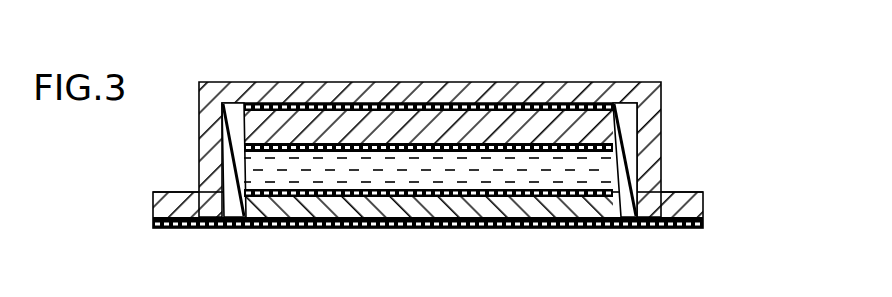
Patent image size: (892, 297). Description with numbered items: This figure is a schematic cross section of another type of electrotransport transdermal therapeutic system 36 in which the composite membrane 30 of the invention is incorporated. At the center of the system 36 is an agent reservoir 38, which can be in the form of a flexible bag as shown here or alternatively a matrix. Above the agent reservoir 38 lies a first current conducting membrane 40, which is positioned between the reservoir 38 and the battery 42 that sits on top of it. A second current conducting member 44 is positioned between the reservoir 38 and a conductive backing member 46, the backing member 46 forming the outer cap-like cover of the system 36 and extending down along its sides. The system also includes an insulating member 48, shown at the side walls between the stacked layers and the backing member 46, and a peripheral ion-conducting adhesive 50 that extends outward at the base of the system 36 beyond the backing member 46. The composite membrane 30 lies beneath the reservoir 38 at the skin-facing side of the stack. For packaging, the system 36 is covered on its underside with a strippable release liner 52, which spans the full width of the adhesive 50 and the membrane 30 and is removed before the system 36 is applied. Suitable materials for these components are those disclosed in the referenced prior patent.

The electrotransport system 36 is at (670, 60).
The conductive backing member 46 is at (284, 92).
The second current conducting member 44 is at (350, 103).
The battery 42 is at (422, 128).
The first current conducting membrane 40 is at (526, 146).
The agent reservoir 38 is at (393, 178).
The composite membrane 30 is at (274, 210).
The insulating member 48 is at (661, 146).
The peripheral ion-conducting adhesive 50 is at (703, 210).
The strippable release liner 52 is at (683, 229).